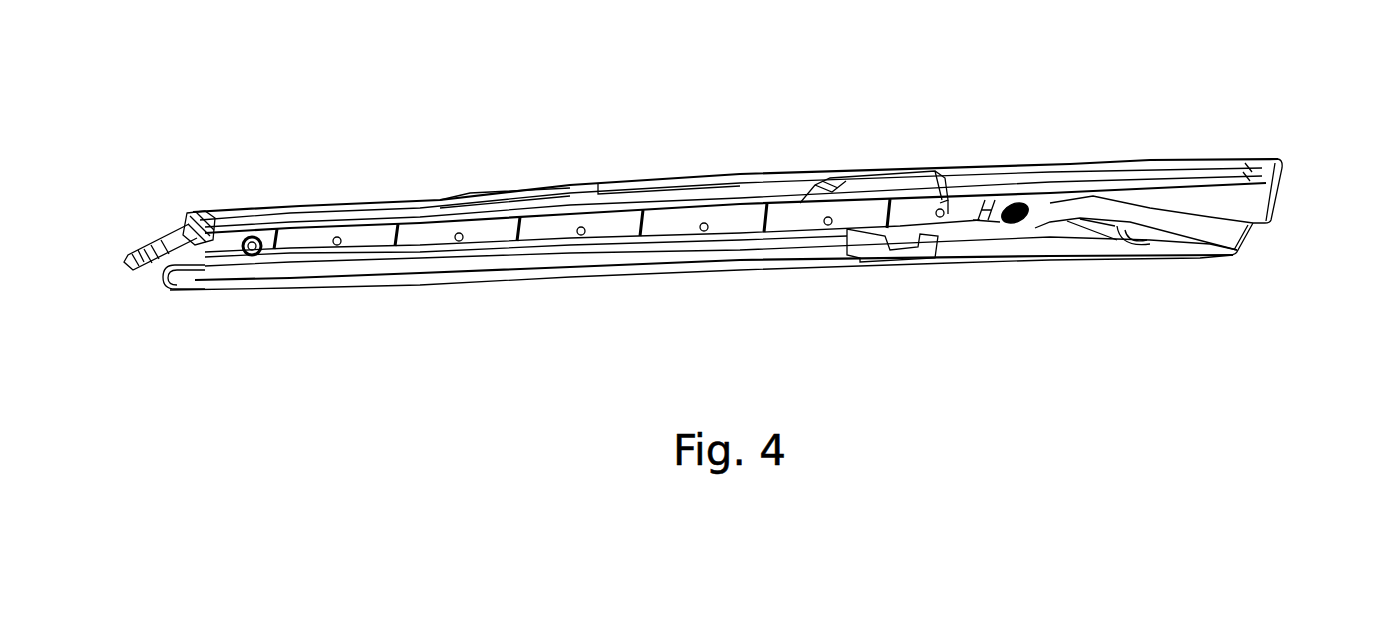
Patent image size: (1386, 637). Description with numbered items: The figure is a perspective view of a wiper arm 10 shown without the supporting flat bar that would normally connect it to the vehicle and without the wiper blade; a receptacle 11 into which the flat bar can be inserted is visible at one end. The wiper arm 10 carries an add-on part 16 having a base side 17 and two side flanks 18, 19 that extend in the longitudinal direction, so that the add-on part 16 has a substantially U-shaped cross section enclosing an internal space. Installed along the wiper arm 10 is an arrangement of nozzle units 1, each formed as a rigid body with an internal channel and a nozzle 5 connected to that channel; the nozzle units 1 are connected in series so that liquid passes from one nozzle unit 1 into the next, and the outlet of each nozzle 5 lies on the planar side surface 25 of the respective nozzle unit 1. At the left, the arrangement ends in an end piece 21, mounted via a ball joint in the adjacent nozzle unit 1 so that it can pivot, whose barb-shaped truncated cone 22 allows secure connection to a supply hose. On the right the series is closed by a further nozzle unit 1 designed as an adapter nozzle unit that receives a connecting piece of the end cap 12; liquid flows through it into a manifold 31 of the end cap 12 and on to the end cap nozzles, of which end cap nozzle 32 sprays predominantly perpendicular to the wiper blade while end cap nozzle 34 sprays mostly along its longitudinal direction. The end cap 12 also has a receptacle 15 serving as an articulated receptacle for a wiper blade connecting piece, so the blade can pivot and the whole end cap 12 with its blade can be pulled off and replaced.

The nozzle unit 1 is at (225, 242).
The nozzle 5 is at (241, 256).
The wiper arm 10 is at (715, 175).
The receptacle 11 is at (168, 285).
The end cap 12 is at (1034, 146).
The receptacle 15 is at (1133, 250).
The add-on part 16 is at (632, 198).
The base side 17 is at (183, 260).
The side flank 18 is at (480, 278).
The side flank 19 is at (507, 203).
The end piece 21 is at (178, 232).
The truncated cone 22 is at (148, 243).
The side surface 25 is at (303, 243).
The manifold 31 is at (1073, 214).
The end cap nozzle 32 is at (1010, 225).
The end cap nozzle 34 is at (1282, 202).